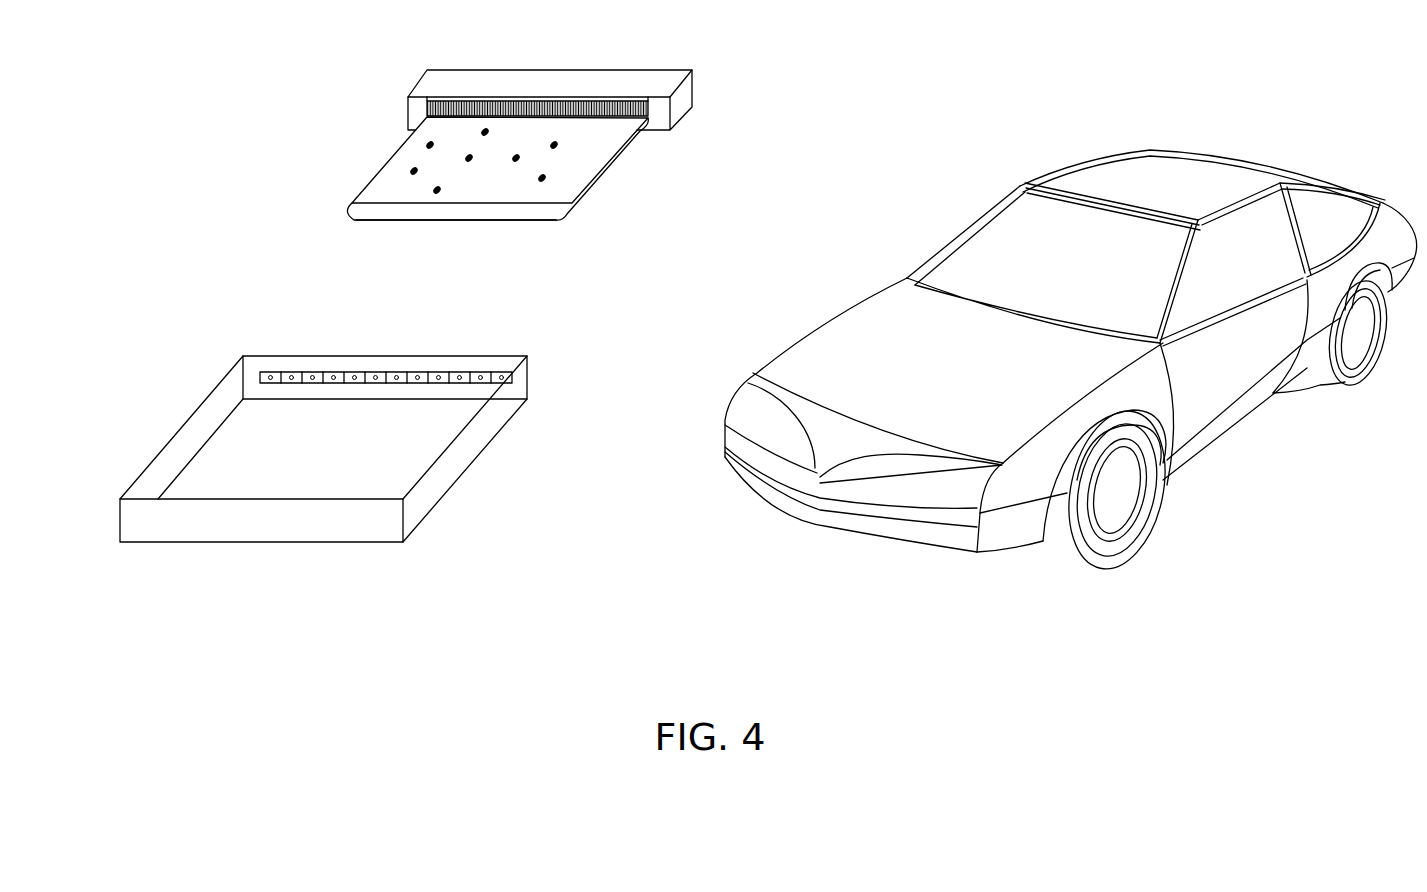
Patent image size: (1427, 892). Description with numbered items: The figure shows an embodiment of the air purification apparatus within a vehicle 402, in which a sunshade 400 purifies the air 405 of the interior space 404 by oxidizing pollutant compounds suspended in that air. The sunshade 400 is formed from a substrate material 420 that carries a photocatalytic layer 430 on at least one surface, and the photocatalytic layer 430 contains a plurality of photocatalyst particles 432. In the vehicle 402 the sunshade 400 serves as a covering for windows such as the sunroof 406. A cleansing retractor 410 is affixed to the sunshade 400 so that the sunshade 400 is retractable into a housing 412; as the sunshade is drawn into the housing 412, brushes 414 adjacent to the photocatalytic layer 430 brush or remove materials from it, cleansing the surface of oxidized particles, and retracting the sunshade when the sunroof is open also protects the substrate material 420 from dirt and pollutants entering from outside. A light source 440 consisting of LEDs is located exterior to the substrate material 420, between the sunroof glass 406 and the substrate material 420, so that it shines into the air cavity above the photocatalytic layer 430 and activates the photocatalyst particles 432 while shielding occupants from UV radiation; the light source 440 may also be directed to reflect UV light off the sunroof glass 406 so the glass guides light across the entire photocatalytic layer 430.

The sunshade 400 is at (417, 39).
The vehicle 402 is at (1071, 334).
The interior space 404 is at (1029, 249).
The air 405 is at (1015, 215).
The sunroof 406 is at (1180, 175).
The cleansing retractor 410 is at (611, 87).
The housing 412 is at (685, 100).
The brushes 414 is at (550, 97).
The substrate material 420 is at (456, 211).
The photocatalytic layer 430 is at (387, 190).
The photocatalyst particles 432 is at (545, 180).
The light source 440 is at (272, 378).